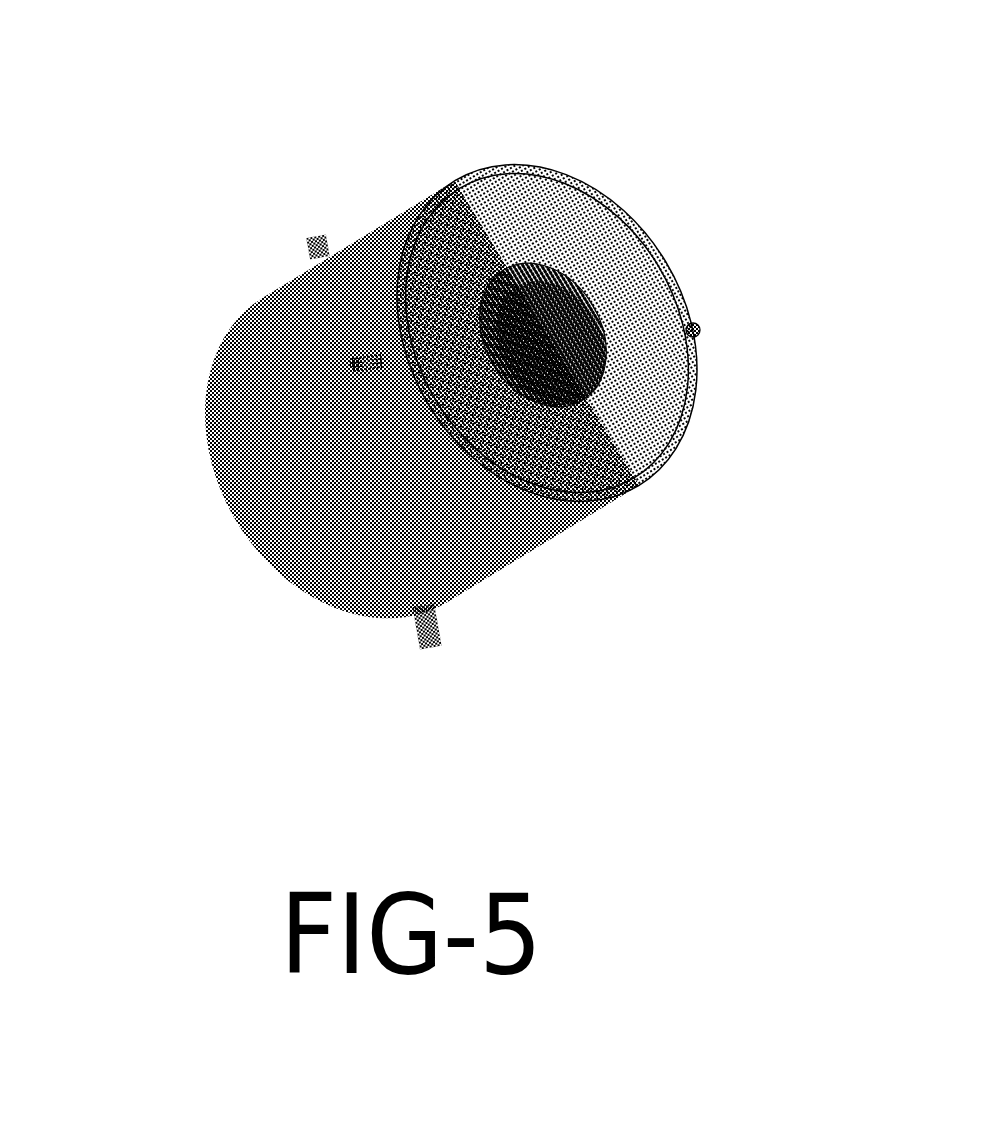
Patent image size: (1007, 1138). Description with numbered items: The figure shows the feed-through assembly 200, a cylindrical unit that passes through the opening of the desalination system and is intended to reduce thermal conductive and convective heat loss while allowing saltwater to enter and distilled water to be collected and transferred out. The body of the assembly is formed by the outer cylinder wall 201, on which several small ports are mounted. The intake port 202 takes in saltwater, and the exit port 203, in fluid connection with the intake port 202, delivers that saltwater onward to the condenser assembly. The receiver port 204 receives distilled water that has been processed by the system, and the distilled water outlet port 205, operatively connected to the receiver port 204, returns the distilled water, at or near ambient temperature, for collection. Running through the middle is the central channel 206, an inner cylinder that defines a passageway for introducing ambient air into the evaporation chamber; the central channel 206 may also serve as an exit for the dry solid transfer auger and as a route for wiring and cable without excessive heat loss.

The feed-through assembly 200 is at (467, 380).
The outer cylinder wall 201 is at (283, 330).
The intake port 202 is at (447, 657).
The exit port 203 is at (708, 327).
The receiver port 204 is at (345, 365).
The distilled water outlet port 205 is at (315, 232).
The central channel 206 is at (582, 332).